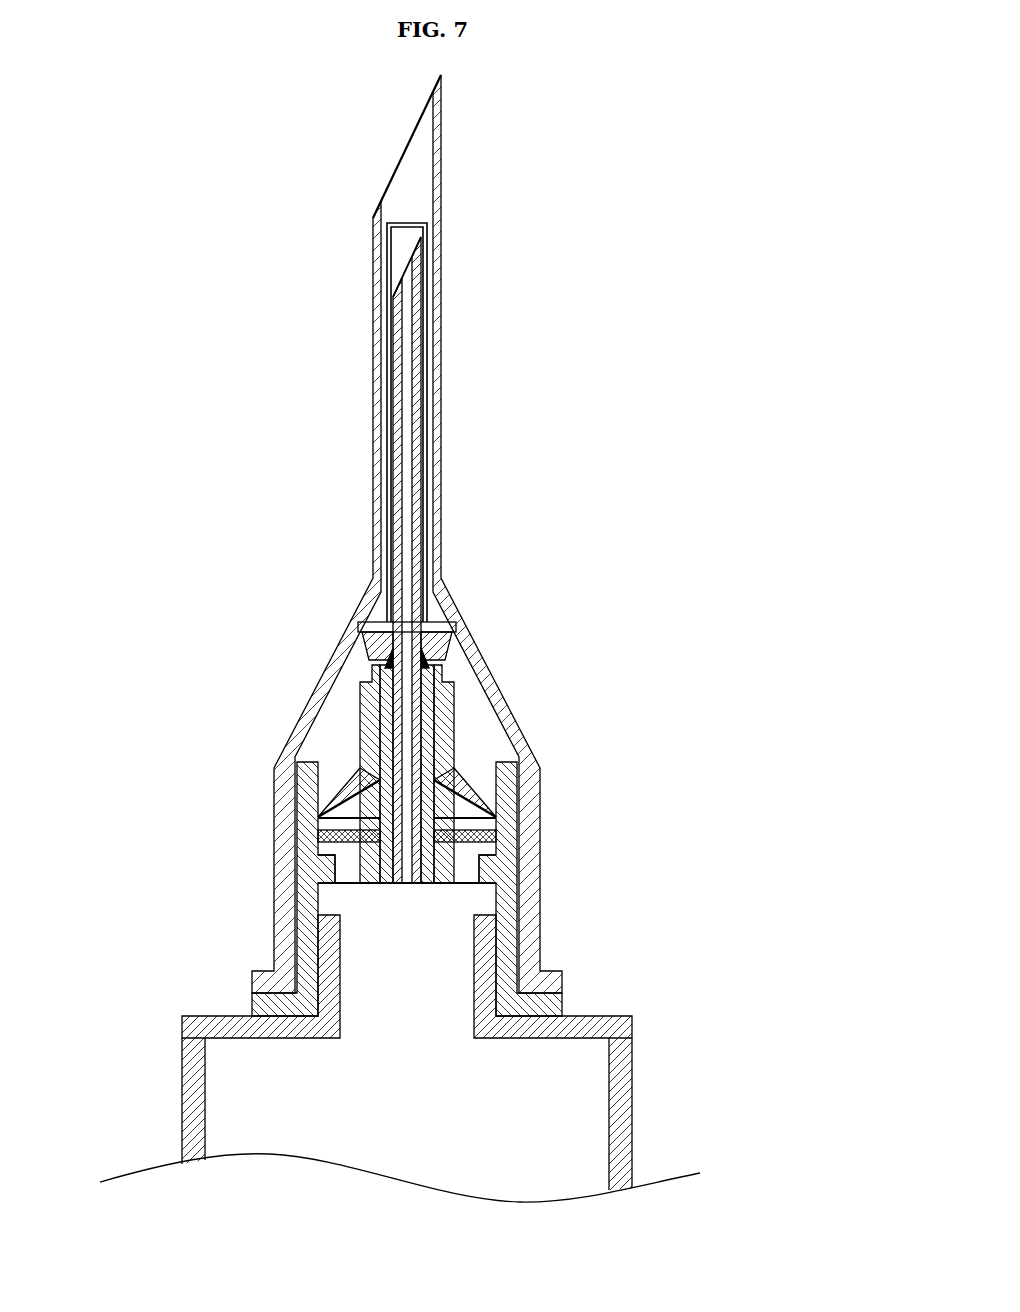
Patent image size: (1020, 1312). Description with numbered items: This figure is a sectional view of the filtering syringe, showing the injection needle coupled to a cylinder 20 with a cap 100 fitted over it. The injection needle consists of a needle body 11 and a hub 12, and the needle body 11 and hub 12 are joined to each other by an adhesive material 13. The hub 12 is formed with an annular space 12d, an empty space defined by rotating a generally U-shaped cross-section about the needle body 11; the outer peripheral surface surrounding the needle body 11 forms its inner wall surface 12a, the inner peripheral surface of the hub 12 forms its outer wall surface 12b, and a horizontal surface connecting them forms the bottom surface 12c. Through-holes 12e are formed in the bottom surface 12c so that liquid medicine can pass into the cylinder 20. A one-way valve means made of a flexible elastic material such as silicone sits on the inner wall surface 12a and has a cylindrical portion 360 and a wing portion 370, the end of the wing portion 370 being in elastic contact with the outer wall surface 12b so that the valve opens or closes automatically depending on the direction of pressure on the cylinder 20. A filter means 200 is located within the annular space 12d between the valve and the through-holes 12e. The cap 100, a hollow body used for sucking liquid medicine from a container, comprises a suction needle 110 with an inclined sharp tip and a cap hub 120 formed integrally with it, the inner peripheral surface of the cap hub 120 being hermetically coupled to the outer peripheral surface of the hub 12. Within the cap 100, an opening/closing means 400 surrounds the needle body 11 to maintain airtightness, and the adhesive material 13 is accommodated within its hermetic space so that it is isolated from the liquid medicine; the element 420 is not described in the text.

The cap 100 is at (497, 568).
The suction needle 110 is at (440, 167).
The needle body 11 is at (407, 330).
The hub 12 is at (297, 878).
The inner wall surface 12a is at (377, 808).
The outer wall surface 12b is at (478, 745).
The bottom surface 12c is at (487, 852).
The annular space 12d is at (485, 815).
The through-holes 12e is at (463, 872).
The adhesive material 13 is at (385, 655).
The cylinder 20 is at (620, 1140).
The cap hub 120 is at (535, 930).
The filter means 200 is at (318, 838).
The cylindrical portion 360 is at (360, 723).
The wing portion 370 is at (465, 810).
The opening/closing means 400 is at (403, 222).
The fixing member 420 is at (443, 632).